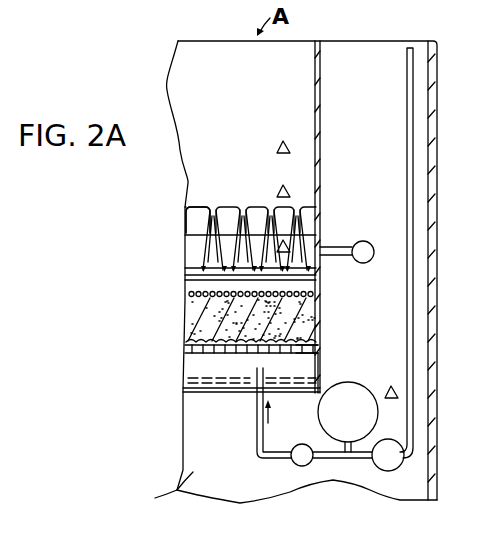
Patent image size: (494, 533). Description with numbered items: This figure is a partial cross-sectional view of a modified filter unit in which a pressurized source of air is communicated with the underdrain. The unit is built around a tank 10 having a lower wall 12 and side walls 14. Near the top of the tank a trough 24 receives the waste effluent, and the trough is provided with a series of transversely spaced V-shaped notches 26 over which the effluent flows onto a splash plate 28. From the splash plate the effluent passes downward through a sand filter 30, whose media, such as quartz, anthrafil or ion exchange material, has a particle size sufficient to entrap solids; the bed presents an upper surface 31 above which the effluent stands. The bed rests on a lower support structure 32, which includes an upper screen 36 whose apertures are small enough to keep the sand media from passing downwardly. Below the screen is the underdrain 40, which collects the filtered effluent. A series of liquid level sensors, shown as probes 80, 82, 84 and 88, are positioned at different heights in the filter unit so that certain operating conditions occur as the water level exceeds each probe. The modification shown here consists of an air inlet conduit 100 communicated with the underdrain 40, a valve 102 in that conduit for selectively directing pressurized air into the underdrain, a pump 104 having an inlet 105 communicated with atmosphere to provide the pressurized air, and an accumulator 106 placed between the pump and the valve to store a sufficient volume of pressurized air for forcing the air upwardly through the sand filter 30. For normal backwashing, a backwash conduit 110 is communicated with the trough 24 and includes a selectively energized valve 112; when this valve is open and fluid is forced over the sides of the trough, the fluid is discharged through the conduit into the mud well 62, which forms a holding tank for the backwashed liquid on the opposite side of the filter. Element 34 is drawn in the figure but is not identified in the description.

The tank 10 is at (321, 74).
The lower wall 12 is at (233, 370).
The side walls 14 is at (321, 85).
The trough 24 is at (227, 206).
The V-shaped notches 26 is at (212, 193).
The splash plate 28 is at (188, 278).
The sand filter 30 is at (307, 327).
The upper surface 31 is at (316, 294).
The lower support structure 32 is at (304, 355).
The support grid 34 is at (195, 353).
The upper screen 36 is at (187, 340).
The underdrain 40 is at (215, 390).
The mud well 62 is at (163, 500).
The probe 80 is at (284, 246).
The probe 82 is at (281, 190).
The probe 84 is at (280, 143).
The probe 88 is at (398, 380).
The air inlet conduit 100 is at (257, 440).
The valve 102 is at (296, 466).
The pump 104 is at (380, 471).
The inlet 105 is at (407, 343).
The accumulator 106 is at (350, 390).
The backwash conduit 110 is at (340, 255).
The valve 112 is at (367, 241).